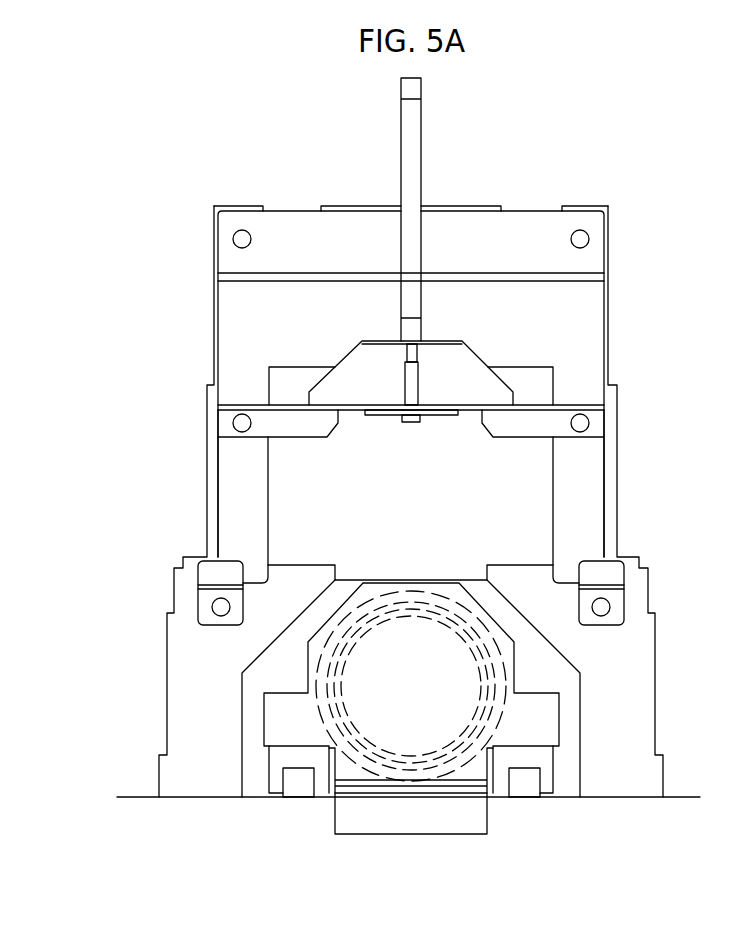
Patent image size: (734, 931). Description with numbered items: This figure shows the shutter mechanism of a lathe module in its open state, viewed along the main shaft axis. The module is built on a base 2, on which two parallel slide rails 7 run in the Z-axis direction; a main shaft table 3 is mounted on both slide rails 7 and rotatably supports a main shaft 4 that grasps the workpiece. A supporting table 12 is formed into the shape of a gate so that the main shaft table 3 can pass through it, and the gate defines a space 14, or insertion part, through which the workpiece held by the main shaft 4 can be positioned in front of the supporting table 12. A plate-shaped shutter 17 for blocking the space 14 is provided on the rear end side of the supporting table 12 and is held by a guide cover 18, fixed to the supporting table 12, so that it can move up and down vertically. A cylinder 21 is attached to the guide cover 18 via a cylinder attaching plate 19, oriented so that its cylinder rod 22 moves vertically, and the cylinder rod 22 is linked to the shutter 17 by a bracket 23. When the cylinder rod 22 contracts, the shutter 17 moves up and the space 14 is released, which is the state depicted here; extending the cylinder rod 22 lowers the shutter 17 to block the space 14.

The base 2 is at (146, 795).
The main shaft table 3 is at (285, 700).
The main shaft 4 is at (497, 650).
The slide rail 7 is at (523, 783).
The supporting table 12 is at (640, 598).
The space 14 is at (567, 717).
The shutter 17 is at (540, 490).
The guide cover 18 is at (236, 513).
The cylinder attaching plate 19 is at (456, 378).
The cylinder 21 is at (406, 163).
The cylinder rod 22 is at (406, 352).
The bracket 23 is at (378, 410).